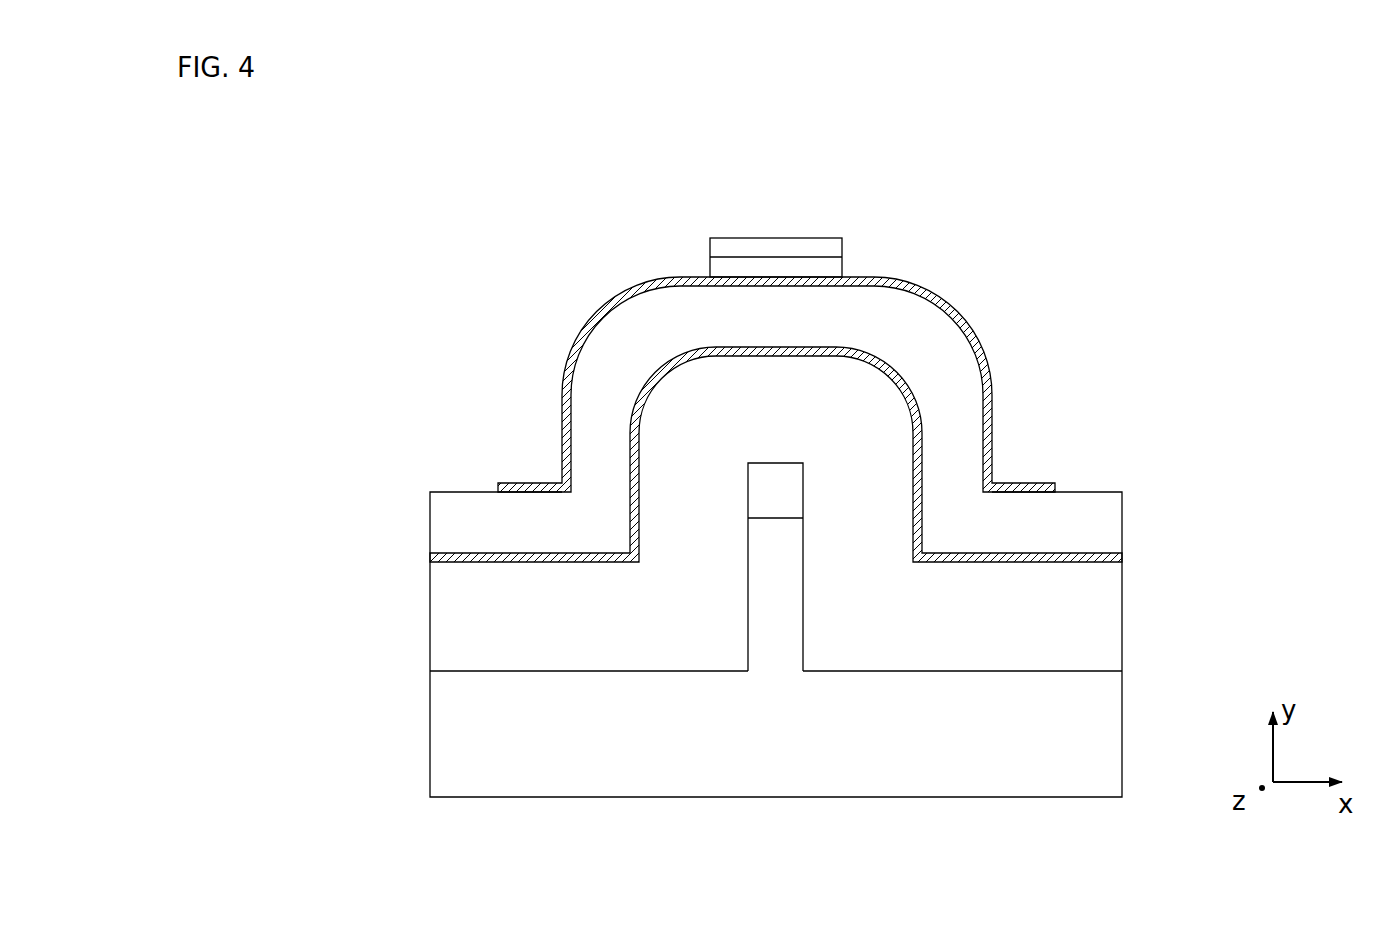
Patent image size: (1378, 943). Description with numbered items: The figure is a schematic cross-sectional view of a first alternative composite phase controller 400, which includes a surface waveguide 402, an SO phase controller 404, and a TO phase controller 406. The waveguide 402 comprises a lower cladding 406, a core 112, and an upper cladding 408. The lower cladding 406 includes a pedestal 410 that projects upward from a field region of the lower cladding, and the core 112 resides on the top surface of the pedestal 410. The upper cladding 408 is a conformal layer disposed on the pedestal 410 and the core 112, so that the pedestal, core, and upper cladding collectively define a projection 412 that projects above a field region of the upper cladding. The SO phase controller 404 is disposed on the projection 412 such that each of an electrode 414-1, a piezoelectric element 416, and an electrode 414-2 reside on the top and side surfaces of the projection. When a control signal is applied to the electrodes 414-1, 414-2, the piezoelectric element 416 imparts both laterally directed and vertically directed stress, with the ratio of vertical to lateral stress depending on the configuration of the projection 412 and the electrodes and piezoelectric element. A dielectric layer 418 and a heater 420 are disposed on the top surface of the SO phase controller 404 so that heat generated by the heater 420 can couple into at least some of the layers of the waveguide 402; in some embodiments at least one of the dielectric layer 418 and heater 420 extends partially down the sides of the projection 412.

The composite phase controller 400 is at (317, 227).
The surface waveguide 402 is at (622, 475).
The SO phase controller 404 is at (1002, 407).
The lower cladding 406 is at (1090, 758).
The upper cladding 408 is at (1089, 647).
The pedestal 410 is at (777, 610).
The projection 412 is at (888, 413).
The electrode 414-1 is at (671, 373).
The electrode 414-2 is at (577, 362).
The piezoelectric element 416 is at (705, 303).
The dielectric layer 418 is at (828, 268).
The heater 420 is at (787, 238).
The core 112 is at (777, 477).